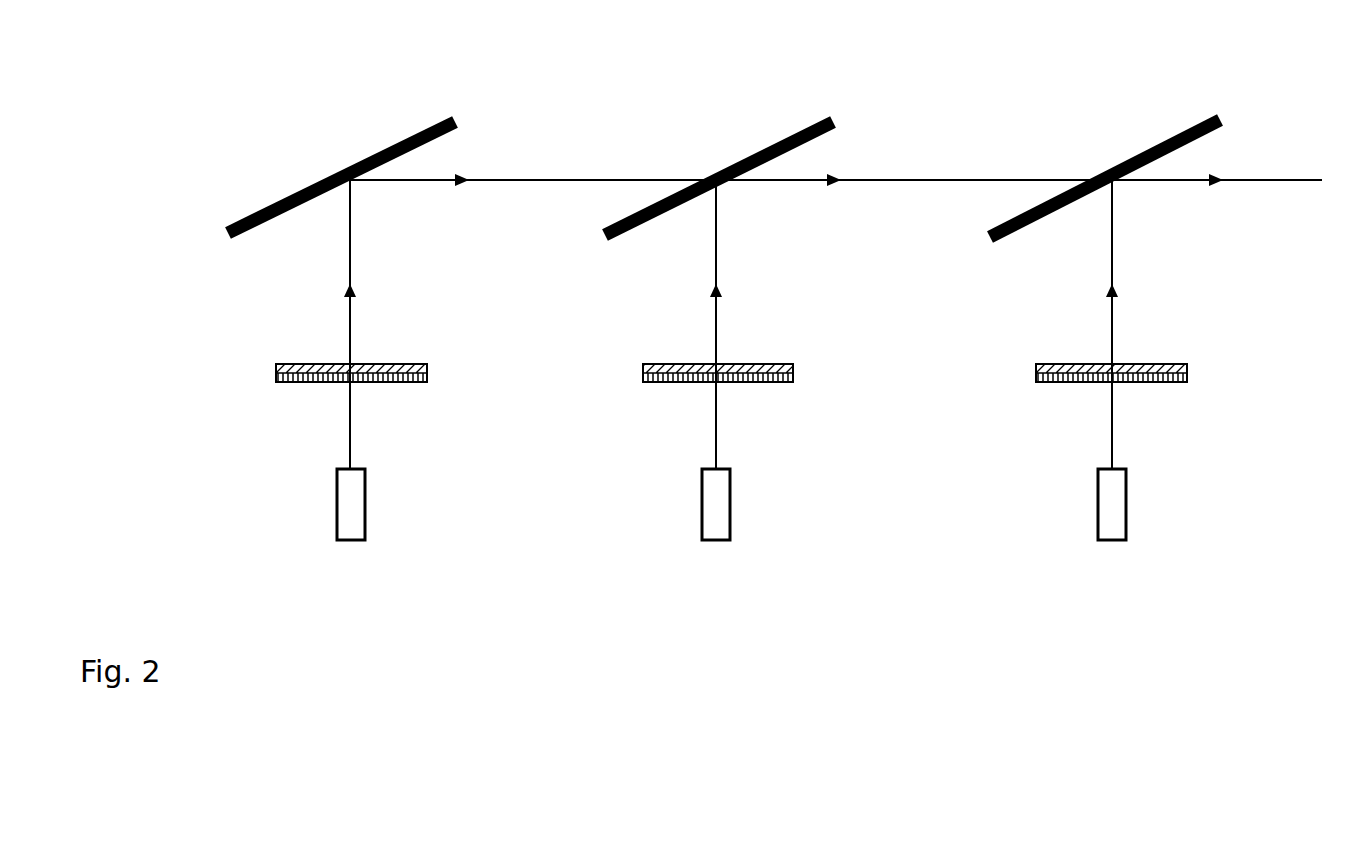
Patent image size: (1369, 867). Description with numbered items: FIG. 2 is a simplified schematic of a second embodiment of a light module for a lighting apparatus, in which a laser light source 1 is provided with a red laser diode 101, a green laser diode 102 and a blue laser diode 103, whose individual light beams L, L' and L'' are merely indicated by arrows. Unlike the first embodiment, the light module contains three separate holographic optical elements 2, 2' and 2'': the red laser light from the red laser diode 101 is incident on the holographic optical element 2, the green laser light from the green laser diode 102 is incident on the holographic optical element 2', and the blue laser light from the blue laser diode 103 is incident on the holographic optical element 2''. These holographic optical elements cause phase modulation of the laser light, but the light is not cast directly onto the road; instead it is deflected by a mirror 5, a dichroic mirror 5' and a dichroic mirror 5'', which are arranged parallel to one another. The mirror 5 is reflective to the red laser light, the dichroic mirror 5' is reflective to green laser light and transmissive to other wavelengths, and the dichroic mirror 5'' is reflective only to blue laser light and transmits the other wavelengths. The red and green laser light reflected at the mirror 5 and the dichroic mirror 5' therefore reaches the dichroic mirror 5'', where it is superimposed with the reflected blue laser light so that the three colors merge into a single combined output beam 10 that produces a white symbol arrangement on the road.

The laser light source 1 is at (255, 503).
The combined output beam 10 is at (926, 100).
The holographic optical element 2 is at (351, 350).
The holographic optical element 2' is at (719, 350).
The holographic optical element 2'' is at (1113, 350).
The mirror 5 is at (341, 153).
The dichroic mirror 5' is at (719, 151).
The dichroic mirror 5'' is at (1105, 152).
The light beam L is at (391, 324).
The light beam L' is at (752, 324).
The light beam L'' is at (1150, 324).
The red laser diode 101 is at (365, 503).
The green laser diode 102 is at (730, 503).
The blue laser diode 103 is at (1126, 503).